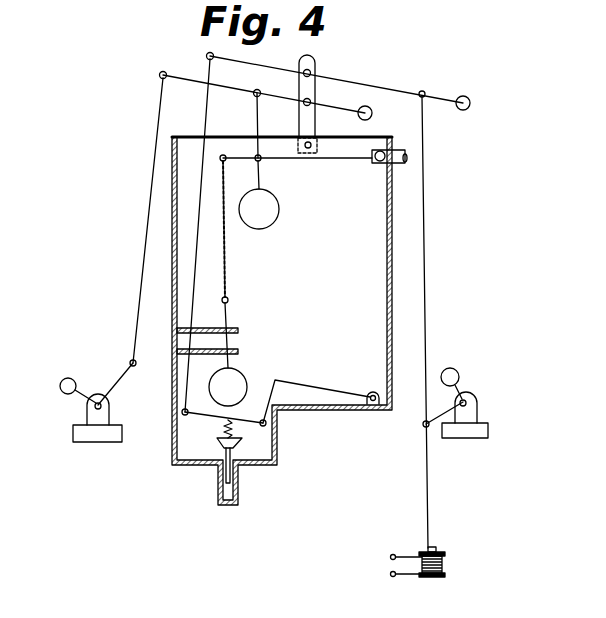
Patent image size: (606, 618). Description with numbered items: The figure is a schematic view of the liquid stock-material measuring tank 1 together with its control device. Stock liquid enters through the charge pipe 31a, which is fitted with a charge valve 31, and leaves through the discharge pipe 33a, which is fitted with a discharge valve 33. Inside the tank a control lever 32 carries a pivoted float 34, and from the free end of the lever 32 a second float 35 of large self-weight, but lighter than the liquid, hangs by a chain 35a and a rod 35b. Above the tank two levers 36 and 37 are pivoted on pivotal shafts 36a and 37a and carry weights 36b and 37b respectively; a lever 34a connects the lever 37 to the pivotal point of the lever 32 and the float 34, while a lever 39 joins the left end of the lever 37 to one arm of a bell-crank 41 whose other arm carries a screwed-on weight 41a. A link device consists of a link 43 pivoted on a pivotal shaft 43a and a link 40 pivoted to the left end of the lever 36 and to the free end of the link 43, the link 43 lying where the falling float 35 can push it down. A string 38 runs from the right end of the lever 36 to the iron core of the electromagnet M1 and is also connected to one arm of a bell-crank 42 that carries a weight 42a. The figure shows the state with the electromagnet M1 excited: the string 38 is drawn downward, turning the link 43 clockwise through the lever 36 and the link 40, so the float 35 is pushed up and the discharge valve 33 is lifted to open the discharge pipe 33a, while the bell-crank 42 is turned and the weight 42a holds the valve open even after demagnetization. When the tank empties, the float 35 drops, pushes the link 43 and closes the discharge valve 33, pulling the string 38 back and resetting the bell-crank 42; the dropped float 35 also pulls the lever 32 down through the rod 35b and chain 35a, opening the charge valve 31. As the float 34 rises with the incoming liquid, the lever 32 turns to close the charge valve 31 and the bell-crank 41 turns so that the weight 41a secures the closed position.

The tank 1 is at (173, 389).
The charge valve 31 is at (373, 163).
The stock-liquid charge pipe 31a is at (400, 164).
The control lever 32 is at (317, 163).
The discharge valve 33 is at (240, 444).
The discharge pipe 33a is at (239, 493).
The float 34 is at (272, 222).
The lever 34a is at (257, 119).
The float 35 is at (235, 378).
The chain 35a is at (227, 262).
The rod 35b is at (229, 340).
The lever 36 is at (361, 85).
The pivotal shaft 36a is at (311, 72).
The weight 36b is at (469, 100).
The lever 37 is at (325, 108).
The pivotal shaft 37a is at (311, 103).
The weight 37b is at (372, 113).
The string 38 is at (428, 221).
The lever 39 is at (139, 285).
The link 40 is at (196, 274).
The bell-crank 41 is at (118, 380).
The weight 41a is at (70, 378).
The bell-crank 42 is at (462, 392).
The weight 42a is at (456, 370).
The link 43 is at (306, 366).
The pivotal shaft 43a is at (370, 394).
The electromagnet M1 is at (443, 562).